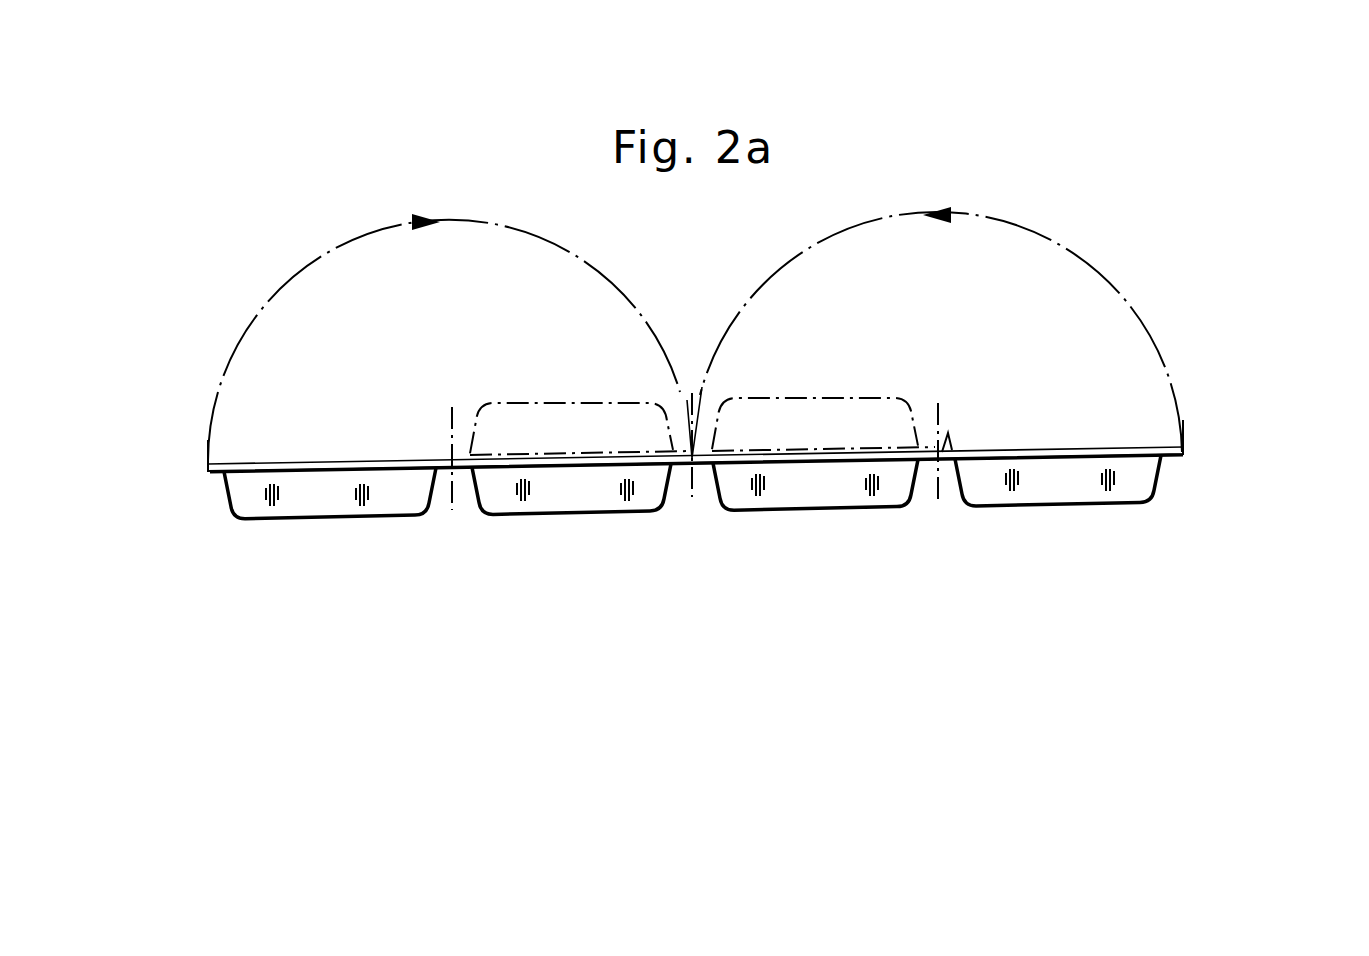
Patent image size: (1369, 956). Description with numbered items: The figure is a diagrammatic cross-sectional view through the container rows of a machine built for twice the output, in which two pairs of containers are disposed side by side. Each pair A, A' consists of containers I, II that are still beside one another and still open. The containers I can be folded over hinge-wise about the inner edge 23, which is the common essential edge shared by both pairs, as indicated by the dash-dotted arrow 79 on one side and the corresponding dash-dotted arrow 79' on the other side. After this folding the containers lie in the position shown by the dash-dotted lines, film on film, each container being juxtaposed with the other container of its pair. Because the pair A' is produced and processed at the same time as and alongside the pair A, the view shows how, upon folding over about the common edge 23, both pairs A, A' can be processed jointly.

The inner edge 23 is at (948, 433).
The container I is at (320, 523).
The container II is at (835, 586).
The dash-dotted arrow 79 is at (941, 309).
The dash-dotted arrow 79' is at (444, 334).
The pair of containers A is at (1306, 473).
The pair of containers A' is at (77, 493).